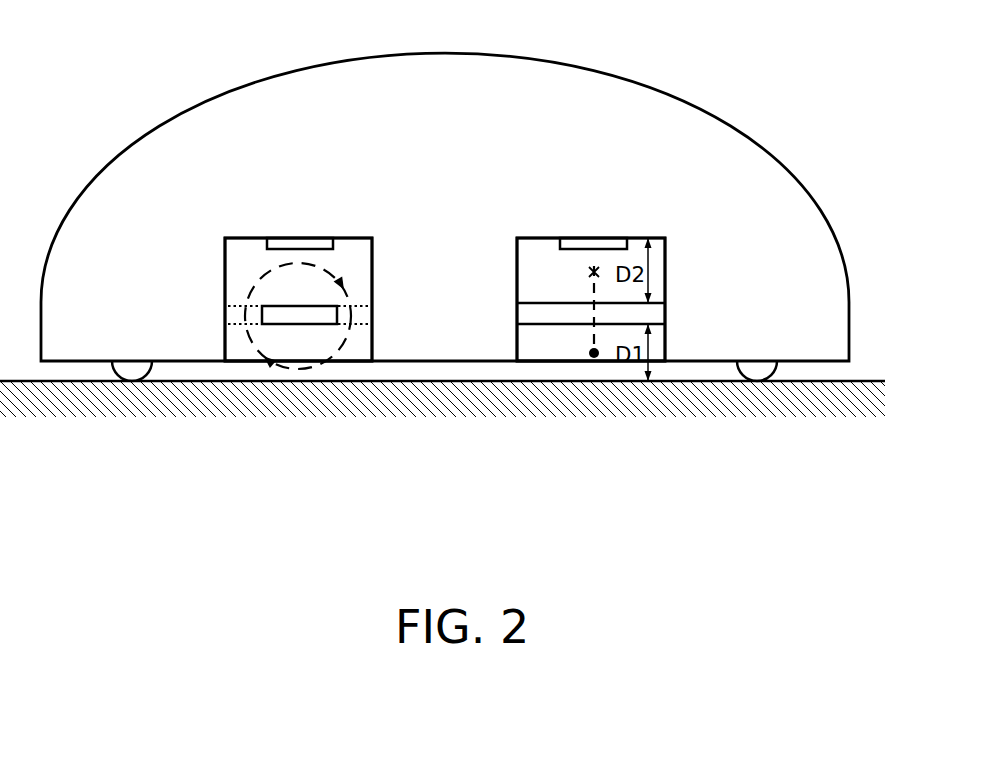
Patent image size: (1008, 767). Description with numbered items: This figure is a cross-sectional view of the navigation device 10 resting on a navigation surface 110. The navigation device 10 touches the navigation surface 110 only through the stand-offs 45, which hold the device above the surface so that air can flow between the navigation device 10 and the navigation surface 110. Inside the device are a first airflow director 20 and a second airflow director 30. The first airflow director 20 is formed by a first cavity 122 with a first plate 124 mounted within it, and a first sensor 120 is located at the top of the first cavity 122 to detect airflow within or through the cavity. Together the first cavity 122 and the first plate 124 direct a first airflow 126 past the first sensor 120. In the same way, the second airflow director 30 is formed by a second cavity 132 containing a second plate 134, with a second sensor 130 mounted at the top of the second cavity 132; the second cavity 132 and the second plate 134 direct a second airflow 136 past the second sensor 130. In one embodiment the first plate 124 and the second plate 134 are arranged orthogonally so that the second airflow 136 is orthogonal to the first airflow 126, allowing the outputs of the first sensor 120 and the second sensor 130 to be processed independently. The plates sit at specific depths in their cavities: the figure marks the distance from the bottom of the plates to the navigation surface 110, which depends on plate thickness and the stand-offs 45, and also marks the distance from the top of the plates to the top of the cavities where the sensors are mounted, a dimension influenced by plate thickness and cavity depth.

The navigation device 10 is at (165, 125).
The first airflow director 20 is at (221, 242).
The second airflow director 30 is at (669, 242).
The stand-offs 45 is at (127, 373).
The navigation surface 110 is at (863, 368).
The first sensor 120 is at (300, 245).
The first airflow cavity 122 is at (350, 250).
The first plate 124 is at (313, 313).
The first airflow 126 is at (255, 340).
The second sensor 130 is at (582, 243).
The second airflow cavity 132 is at (537, 252).
The second plate 134 is at (560, 313).
The second airflow 136 is at (594, 353).